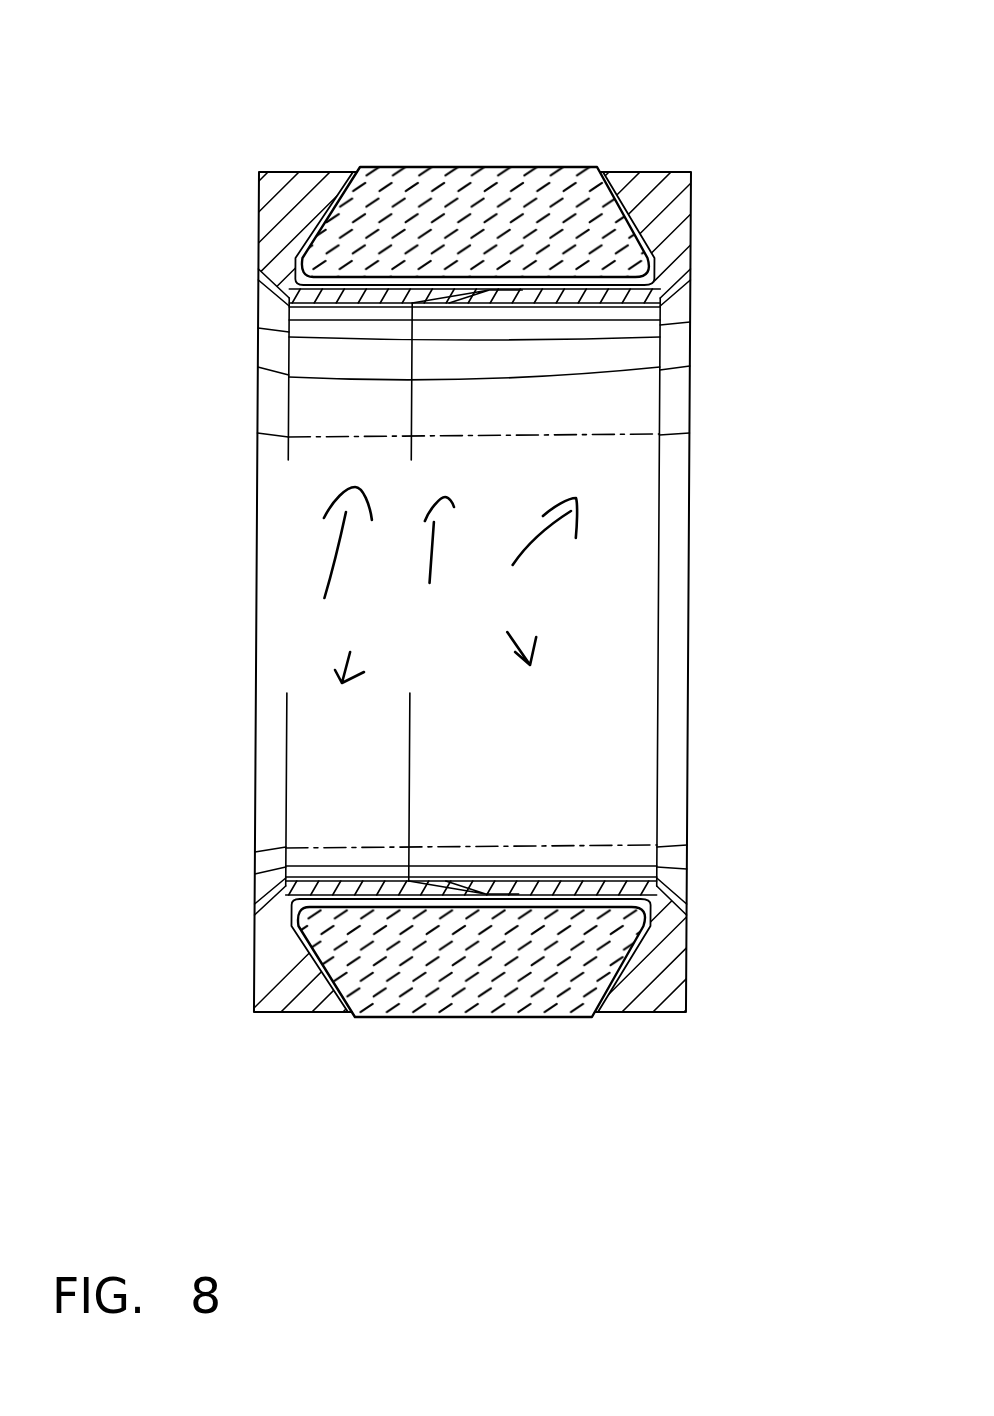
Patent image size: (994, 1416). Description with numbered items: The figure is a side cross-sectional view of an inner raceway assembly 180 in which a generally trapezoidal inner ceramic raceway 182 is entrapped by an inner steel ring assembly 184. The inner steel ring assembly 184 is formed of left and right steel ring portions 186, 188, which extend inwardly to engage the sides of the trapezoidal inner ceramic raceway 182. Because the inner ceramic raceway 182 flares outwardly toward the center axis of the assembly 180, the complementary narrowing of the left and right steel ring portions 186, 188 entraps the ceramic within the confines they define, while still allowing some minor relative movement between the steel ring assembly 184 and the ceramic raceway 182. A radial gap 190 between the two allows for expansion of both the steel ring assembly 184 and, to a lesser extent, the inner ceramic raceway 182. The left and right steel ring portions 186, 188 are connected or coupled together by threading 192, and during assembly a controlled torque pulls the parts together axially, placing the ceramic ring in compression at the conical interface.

The inner raceway assembly 180 is at (734, 86).
The inner ceramic raceway 182 is at (452, 173).
The inner steel ring assembly 184 is at (733, 265).
The left steel ring portion 186 is at (268, 230).
The right steel ring portion 188 is at (678, 210).
The radial gap 190 is at (575, 287).
The threading 192 is at (490, 291).